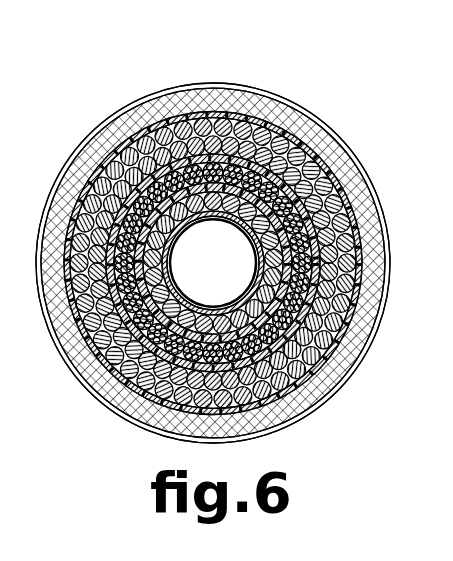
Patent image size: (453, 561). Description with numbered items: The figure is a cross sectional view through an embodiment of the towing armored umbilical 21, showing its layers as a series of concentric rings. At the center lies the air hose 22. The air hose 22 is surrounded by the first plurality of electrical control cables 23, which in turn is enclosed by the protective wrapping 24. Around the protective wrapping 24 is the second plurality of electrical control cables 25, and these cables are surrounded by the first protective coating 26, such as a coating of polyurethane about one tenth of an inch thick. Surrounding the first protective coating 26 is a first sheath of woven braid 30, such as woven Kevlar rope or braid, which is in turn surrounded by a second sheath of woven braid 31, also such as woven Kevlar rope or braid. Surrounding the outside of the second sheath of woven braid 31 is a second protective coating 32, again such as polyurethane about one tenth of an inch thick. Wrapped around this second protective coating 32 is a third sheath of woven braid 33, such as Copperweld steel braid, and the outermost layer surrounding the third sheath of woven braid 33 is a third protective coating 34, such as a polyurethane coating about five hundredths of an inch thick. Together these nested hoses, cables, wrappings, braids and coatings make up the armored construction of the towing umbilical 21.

The towing armored umbilical 21 is at (258, 78).
The air hose 22 is at (168, 251).
The first plurality of electrical control cables 23 is at (260, 278).
The protective wrapping 24 is at (250, 228).
The second plurality of electrical control cables 25 is at (310, 163).
The first protective coating 26 is at (340, 197).
The first sheath of woven braid 30 is at (370, 215).
The second sheath of woven braid 31 is at (353, 248).
The second protective coating 32 is at (353, 302).
The third sheath of woven braid 33 is at (353, 347).
The third protective coating 34 is at (328, 398).